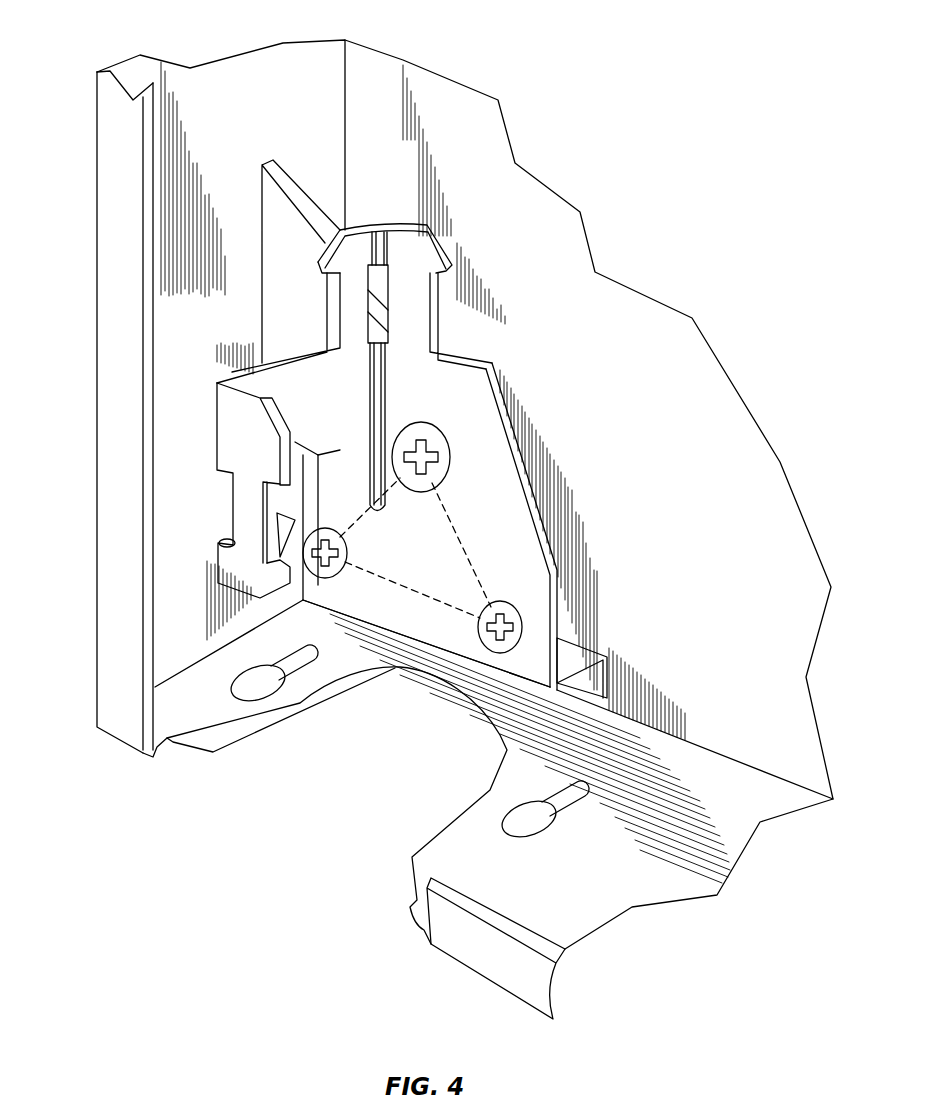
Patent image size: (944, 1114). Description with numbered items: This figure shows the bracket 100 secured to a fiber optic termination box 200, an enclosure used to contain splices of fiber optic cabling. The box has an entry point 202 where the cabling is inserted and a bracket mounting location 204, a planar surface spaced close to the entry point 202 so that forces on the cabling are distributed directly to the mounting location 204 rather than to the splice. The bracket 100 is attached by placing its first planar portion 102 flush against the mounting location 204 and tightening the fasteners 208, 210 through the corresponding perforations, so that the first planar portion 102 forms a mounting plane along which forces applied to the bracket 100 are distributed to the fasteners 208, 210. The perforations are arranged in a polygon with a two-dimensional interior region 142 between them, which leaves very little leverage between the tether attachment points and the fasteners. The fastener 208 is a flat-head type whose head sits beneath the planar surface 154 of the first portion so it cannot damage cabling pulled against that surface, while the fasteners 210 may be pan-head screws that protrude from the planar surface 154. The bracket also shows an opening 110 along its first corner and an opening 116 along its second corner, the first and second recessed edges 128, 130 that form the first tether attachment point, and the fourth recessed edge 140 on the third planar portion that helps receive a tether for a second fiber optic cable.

The bracket 100 is at (339, 361).
The first planar portion 102 is at (467, 526).
The opening 110 is at (377, 290).
The opening 116 is at (163, 496).
The first recessed edge 128 is at (337, 310).
The second recessed edge 130 is at (432, 295).
The fourth recessed edge 140 is at (268, 540).
The two-dimensional interior region 142 is at (472, 564).
The planar surface 154 is at (499, 514).
The fiber optic termination box 200 is at (724, 468).
The entry point 202 is at (361, 786).
The bracket mounting location 204 is at (308, 203).
The fastener 208 is at (448, 464).
The fasteners 210 is at (513, 618).